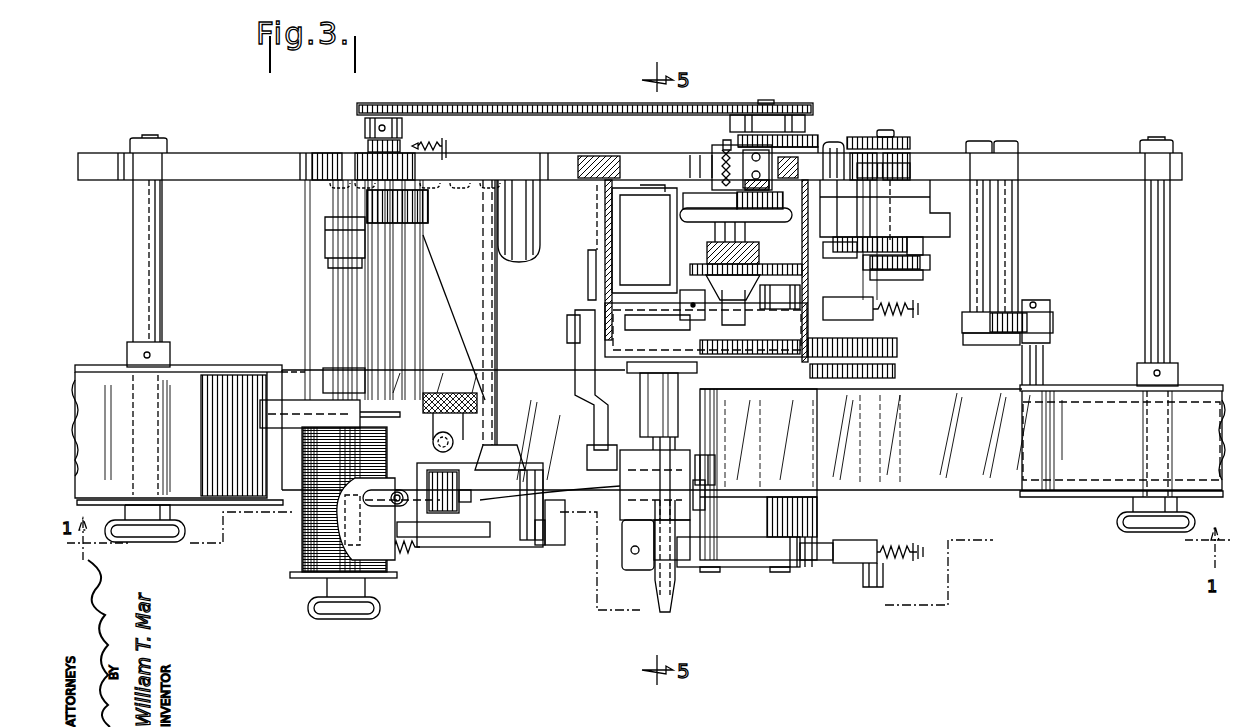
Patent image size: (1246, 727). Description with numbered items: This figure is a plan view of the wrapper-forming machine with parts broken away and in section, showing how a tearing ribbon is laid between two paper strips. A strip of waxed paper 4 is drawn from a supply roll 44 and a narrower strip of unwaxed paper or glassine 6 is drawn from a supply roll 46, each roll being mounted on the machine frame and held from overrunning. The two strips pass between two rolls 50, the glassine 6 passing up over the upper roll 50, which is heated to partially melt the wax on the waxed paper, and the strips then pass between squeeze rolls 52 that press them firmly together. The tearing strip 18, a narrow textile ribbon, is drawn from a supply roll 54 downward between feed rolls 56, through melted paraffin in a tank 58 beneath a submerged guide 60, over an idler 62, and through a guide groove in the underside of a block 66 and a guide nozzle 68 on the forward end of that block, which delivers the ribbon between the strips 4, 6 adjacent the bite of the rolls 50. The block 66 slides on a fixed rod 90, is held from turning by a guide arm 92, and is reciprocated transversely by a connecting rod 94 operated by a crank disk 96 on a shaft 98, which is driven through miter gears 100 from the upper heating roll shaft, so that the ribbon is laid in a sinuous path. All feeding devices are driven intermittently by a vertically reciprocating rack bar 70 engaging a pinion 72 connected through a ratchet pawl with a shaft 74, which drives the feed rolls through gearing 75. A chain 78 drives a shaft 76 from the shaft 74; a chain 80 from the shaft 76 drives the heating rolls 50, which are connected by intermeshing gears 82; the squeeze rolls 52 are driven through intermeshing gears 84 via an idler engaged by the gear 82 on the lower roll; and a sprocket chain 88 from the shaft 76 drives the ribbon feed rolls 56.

The strip of waxed paper 4 is at (445, 378).
The strip of unwaxed paper or glassine 6 is at (975, 478).
The tearing strip 18 is at (560, 488).
The supply roll 44 is at (232, 367).
The supply roll 46 is at (1085, 388).
The rolls 50 is at (712, 550).
The squeeze rolls 52 is at (832, 550).
The supply roll 54 is at (300, 556).
The feed rolls 56 is at (400, 472).
The tank 58 is at (495, 550).
The guide 60 is at (470, 498).
The idler 62 is at (536, 522).
The block 66 is at (638, 500).
The guide nozzle 68 is at (705, 478).
The rack bar 70 is at (922, 255).
The pinion 72 is at (890, 243).
The shaft 74 is at (895, 134).
The gearing 75 is at (908, 170).
The shaft 76 is at (771, 103).
The chain 78 is at (817, 137).
The chain 80 is at (808, 280).
The intermeshing gears 82 is at (700, 342).
The intermeshing gears 84 is at (897, 348).
The sprocket chain 88 is at (577, 103).
The fixed rod 90 is at (645, 530).
The guide arm 92 is at (660, 580).
The connecting rod 94 is at (575, 358).
The crank disk 96 is at (588, 260).
The shaft 98 is at (638, 286).
The miter gears 100 is at (752, 298).